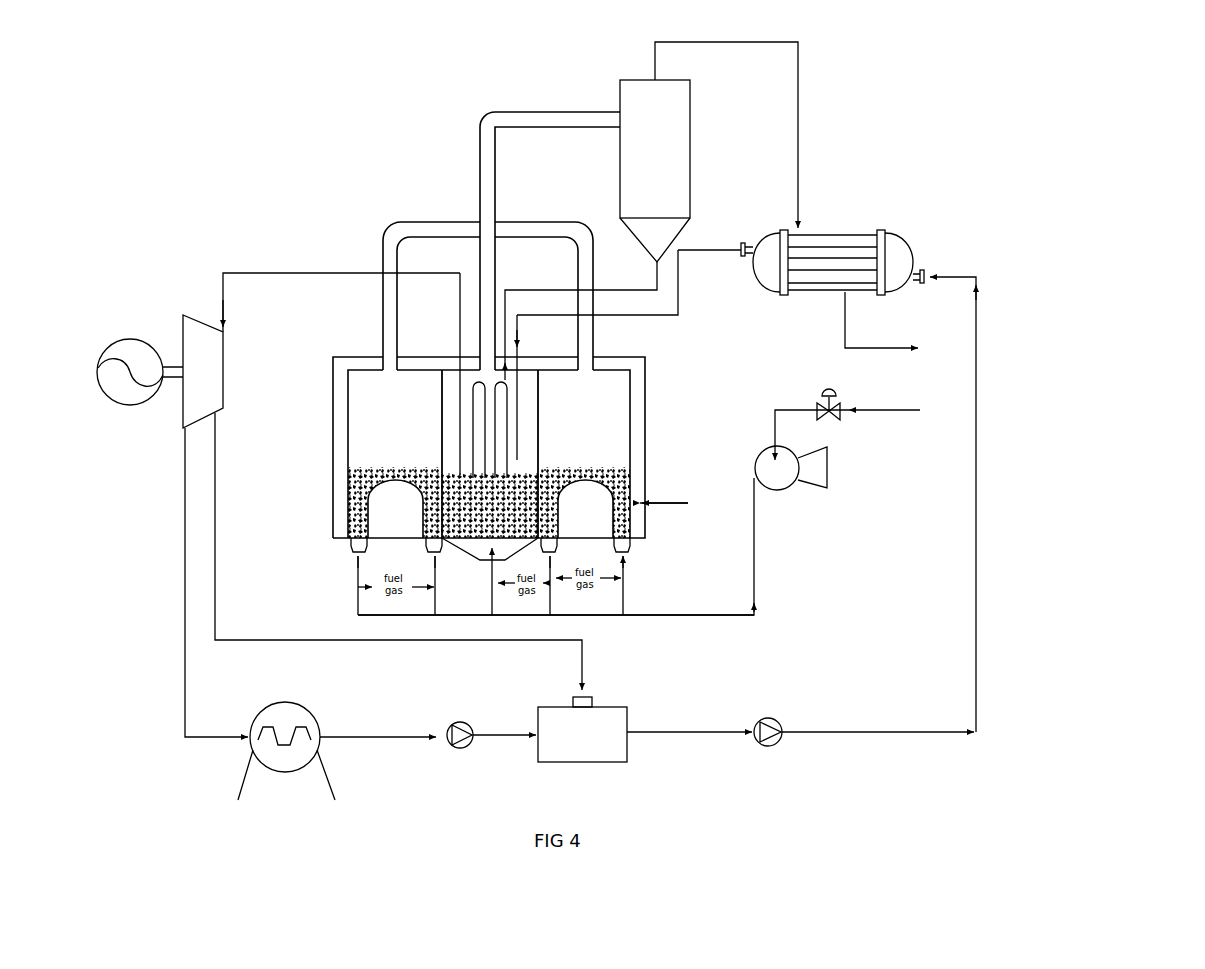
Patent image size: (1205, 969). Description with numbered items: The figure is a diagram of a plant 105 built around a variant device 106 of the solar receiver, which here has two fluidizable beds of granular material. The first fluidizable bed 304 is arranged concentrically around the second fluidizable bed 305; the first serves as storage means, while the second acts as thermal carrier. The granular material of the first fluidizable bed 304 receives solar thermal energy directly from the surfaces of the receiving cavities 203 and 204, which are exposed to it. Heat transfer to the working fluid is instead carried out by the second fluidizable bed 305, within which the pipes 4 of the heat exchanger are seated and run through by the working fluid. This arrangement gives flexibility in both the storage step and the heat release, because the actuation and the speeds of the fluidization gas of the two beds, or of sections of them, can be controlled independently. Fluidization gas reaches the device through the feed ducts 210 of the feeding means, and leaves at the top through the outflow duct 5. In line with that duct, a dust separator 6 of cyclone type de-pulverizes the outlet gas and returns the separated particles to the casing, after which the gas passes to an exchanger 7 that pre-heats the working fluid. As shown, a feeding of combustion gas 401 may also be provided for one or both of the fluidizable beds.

The pipe bundles of the heat exchanger 4 is at (520, 417).
The outflow duct 5 is at (425, 223).
The dust separator 6 is at (668, 143).
The exchanger 7 is at (897, 252).
The plant 105 is at (1124, 313).
The device 106 is at (717, 382).
The receiving cavity 203 is at (412, 523).
The receiving cavity 204 is at (603, 523).
The feed ducts 210 is at (702, 617).
The first fluidizable bed 304 is at (367, 485).
The second fluidizable bed 305 is at (473, 522).
The combustion gas feeding 401 is at (380, 588).